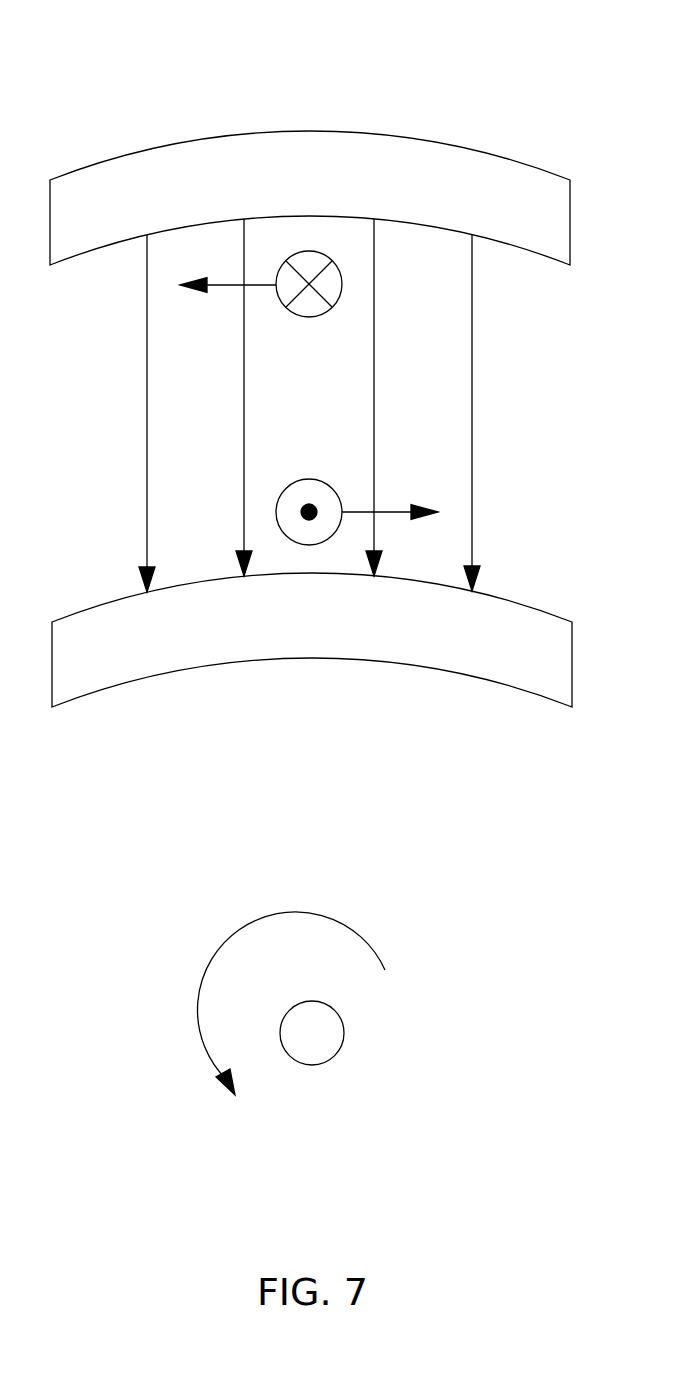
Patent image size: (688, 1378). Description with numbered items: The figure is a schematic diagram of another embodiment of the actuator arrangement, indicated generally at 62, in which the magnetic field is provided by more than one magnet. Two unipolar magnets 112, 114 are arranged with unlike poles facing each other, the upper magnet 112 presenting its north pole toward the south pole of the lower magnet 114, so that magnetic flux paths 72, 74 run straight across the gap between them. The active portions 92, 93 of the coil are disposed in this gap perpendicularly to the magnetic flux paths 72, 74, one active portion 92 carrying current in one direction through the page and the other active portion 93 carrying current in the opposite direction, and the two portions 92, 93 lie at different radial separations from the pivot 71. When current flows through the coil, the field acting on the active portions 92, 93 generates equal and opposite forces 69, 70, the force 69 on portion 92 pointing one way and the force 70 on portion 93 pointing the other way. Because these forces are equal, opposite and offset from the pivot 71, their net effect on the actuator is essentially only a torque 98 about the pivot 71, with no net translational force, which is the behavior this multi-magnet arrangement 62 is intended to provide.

The motor / electromagnetic actuator assembly 62 is at (530, 58).
The force 69 is at (227, 287).
The force 70 is at (402, 508).
The pivot 71 is at (345, 1043).
The magnetic flux path 72 is at (147, 425).
The magnetic flux path 74 is at (472, 388).
The active portion of the coil 92 is at (327, 312).
The active portion of the coil 93 is at (333, 483).
The torque 98 is at (213, 1020).
The unipolar magnet 112 is at (160, 148).
The unipolar magnet 114 is at (150, 677).